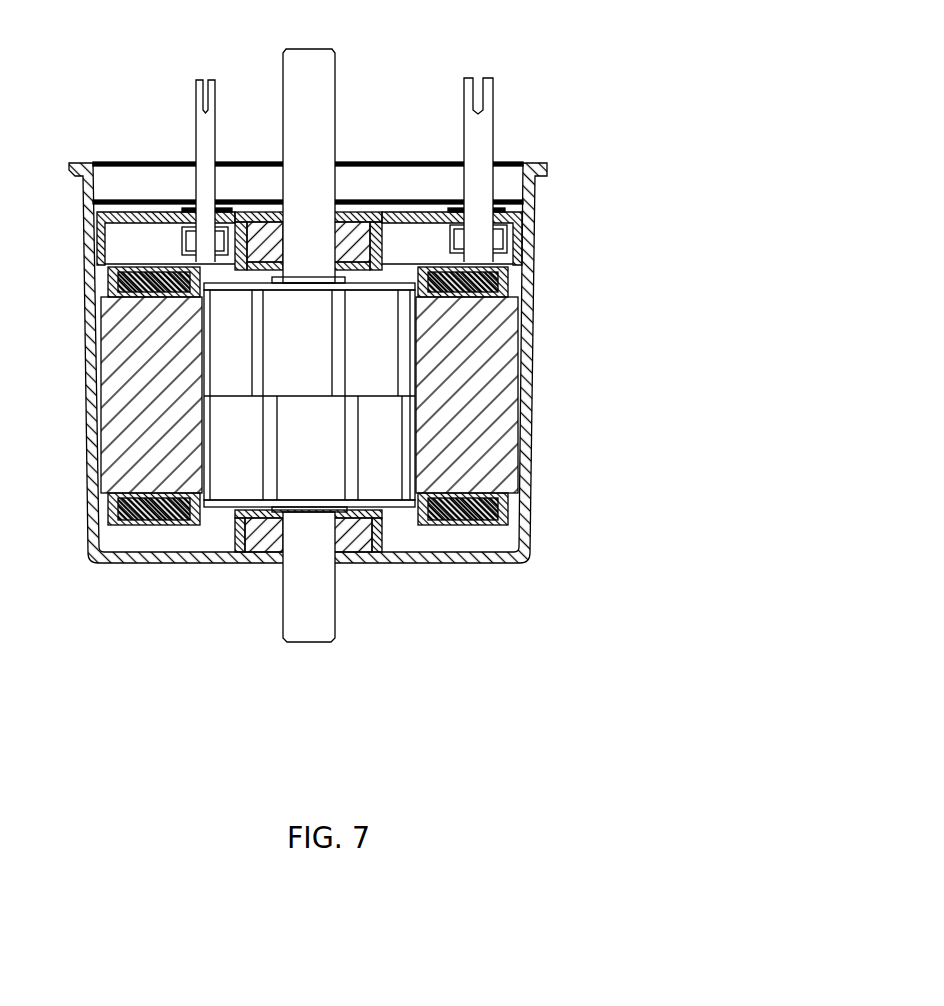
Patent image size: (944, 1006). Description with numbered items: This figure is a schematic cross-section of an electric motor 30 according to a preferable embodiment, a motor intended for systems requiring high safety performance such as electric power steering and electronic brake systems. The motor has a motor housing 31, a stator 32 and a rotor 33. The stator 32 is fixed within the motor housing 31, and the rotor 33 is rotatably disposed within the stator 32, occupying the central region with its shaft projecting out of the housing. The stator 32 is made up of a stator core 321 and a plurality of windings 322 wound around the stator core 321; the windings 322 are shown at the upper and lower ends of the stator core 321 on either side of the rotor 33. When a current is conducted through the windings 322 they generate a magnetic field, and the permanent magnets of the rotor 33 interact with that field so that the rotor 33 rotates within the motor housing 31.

The motor 30 is at (558, 98).
The motor housing 31 is at (528, 233).
The stator 32 is at (428, 391).
The stator core 321 is at (463, 330).
The windings 322 is at (532, 282).
The rotor 33 is at (368, 455).